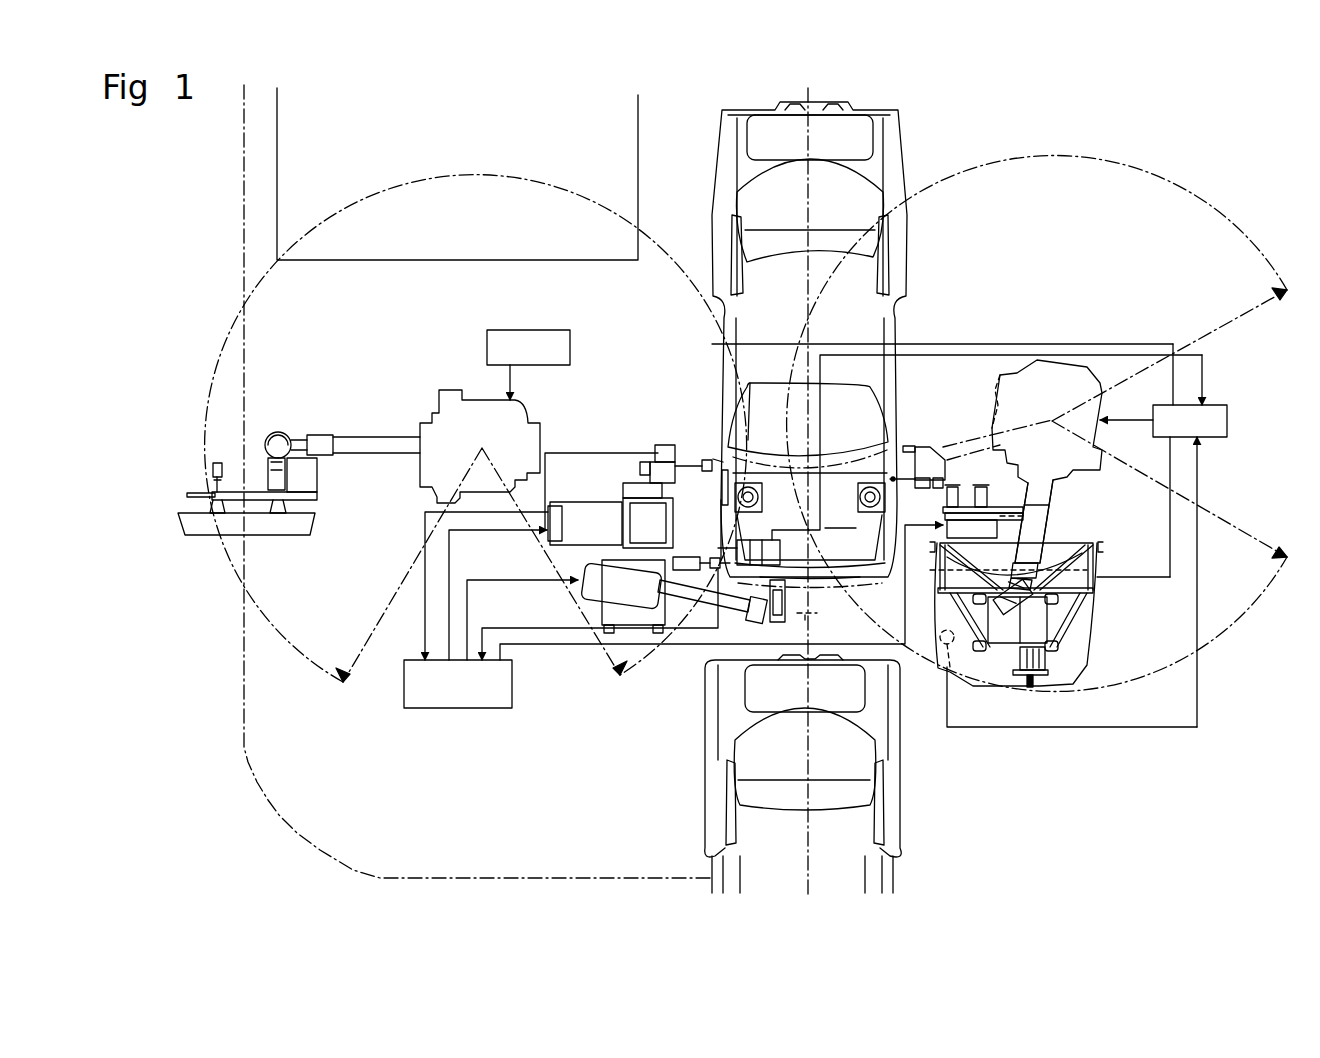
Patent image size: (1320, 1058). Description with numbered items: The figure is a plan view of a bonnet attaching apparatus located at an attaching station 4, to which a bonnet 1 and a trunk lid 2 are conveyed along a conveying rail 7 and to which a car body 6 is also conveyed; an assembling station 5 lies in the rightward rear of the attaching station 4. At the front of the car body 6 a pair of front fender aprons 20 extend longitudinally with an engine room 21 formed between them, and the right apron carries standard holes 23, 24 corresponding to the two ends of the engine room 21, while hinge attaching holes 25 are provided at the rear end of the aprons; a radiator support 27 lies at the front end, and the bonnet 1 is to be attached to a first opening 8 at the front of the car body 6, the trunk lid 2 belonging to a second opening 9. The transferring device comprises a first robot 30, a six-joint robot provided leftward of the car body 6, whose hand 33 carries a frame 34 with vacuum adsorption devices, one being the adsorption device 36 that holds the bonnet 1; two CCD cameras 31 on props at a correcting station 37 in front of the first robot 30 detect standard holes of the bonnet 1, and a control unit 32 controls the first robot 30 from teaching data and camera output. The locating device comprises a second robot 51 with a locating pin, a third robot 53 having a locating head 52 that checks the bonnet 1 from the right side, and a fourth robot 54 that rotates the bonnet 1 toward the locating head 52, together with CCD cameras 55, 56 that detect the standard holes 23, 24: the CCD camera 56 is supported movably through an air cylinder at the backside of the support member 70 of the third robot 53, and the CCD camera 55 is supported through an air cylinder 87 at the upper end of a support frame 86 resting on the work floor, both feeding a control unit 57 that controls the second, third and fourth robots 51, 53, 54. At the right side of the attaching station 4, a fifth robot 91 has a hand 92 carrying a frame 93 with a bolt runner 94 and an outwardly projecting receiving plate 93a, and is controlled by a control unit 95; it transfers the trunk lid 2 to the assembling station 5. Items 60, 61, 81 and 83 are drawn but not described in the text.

The bonnet 1 is at (1073, 684).
The trunk lid 2 is at (292, 537).
The attaching station 4 is at (1125, 200).
The assembling station 5 is at (458, 149).
The car body 6 is at (912, 142).
The conveying rail 7 is at (244, 730).
The first opening 8 is at (845, 562).
The second opening 9 is at (850, 128).
The front fender aprons 20 is at (727, 508).
The engine room 21 is at (841, 515).
The standard hole 23 is at (728, 570).
The standard hole 24 is at (722, 462).
The hinge attaching holes 25 is at (748, 440).
The radiator support 27 is at (810, 580).
The first robot 30 is at (1085, 368).
The CCD cameras 31 is at (978, 572).
The control unit 32 is at (1205, 405).
The hand 33 is at (1040, 560).
The frame 34 is at (1095, 562).
The adsorption device 36 is at (1052, 600).
The correcting station 37 is at (1100, 604).
The second robot 51 is at (590, 630).
The locating head 52 is at (722, 488).
The third robot 53 is at (647, 500).
The fourth robot 54 is at (1045, 523).
The CCD camera 55 is at (712, 515).
The CCD camera 56 is at (703, 460).
The control unit 57 is at (420, 708).
The drive rod 60 is at (733, 612).
The bracket 61 is at (760, 545).
The support member 70 is at (655, 447).
The detector 81 is at (945, 468).
The visual sensor 83 is at (918, 448).
The support frame 86 is at (668, 562).
The air cylinder 87 is at (672, 548).
The fifth robot 91 is at (443, 392).
The hand 92 is at (316, 436).
The frame 93 is at (318, 502).
The receiving plate 93a is at (200, 493).
The bolt runner 94 is at (318, 478).
The control unit 95 is at (515, 330).